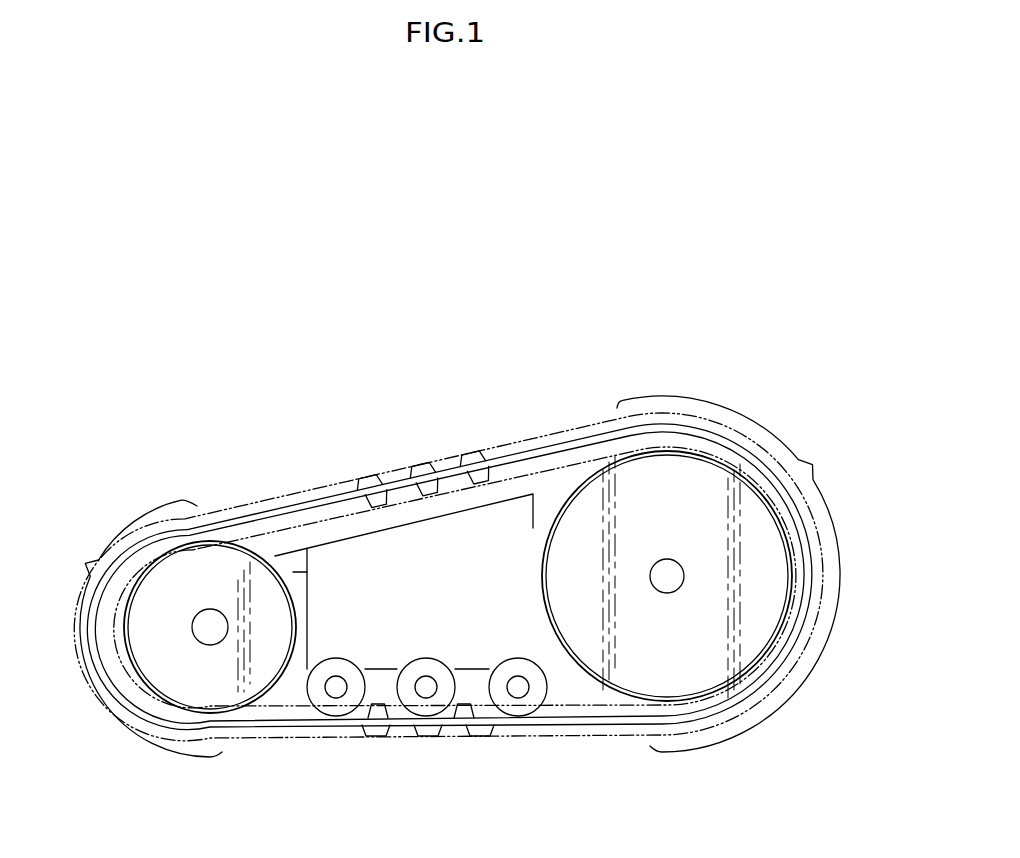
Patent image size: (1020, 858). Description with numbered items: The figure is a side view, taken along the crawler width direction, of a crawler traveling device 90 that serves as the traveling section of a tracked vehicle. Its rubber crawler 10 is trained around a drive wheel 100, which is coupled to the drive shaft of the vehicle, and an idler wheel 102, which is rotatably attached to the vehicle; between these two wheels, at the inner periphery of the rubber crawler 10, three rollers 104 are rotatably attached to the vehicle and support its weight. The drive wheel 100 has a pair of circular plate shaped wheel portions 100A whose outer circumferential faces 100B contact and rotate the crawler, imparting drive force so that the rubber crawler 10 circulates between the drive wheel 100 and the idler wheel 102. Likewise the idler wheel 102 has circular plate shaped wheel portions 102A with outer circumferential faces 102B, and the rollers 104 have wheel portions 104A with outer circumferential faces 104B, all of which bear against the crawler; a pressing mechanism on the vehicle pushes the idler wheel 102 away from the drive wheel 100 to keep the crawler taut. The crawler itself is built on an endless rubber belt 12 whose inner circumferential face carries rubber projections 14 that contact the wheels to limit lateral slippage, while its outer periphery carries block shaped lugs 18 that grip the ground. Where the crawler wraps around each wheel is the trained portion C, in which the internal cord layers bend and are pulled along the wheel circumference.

The crawler traveling device 90 is at (448, 514).
The rubber crawler 10 is at (608, 422).
The rubber belt 12 is at (501, 458).
The rubber projections 14 is at (370, 505).
The lugs 18 is at (418, 462).
The drive wheel 100 is at (522, 545).
The wheel portions 100A is at (580, 503).
The outer circumferential faces 100B is at (580, 687).
The idler wheel 102 is at (297, 578).
The wheel portions 102A is at (218, 563).
The outer circumferential faces 102B is at (291, 680).
The rollers 104 is at (348, 653).
The wheel portions 104A is at (337, 705).
The outer circumferential faces 104B is at (371, 683).
The trained portion C is at (450, 576).